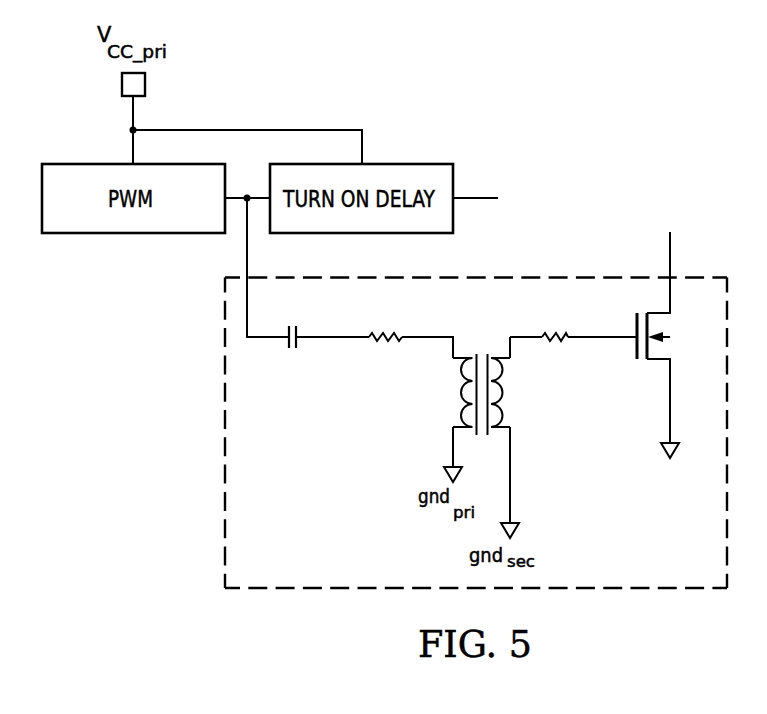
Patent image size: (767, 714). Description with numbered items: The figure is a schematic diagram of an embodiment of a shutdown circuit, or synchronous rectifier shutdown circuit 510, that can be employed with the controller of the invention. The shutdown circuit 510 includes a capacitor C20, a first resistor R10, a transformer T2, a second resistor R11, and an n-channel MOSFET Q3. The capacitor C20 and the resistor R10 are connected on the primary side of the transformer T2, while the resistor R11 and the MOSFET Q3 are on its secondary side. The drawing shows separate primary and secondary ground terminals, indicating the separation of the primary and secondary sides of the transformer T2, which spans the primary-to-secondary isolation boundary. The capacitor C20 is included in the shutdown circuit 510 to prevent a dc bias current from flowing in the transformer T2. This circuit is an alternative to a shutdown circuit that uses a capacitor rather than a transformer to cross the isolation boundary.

The synchronous rectifier shutdown circuit 510 is at (557, 279).
The capacitor C20 is at (292, 321).
The resistor R10 is at (385, 323).
The transformer T2 is at (481, 384).
The resistor R11 is at (557, 323).
The n-channel MOSFET Q3 is at (671, 337).